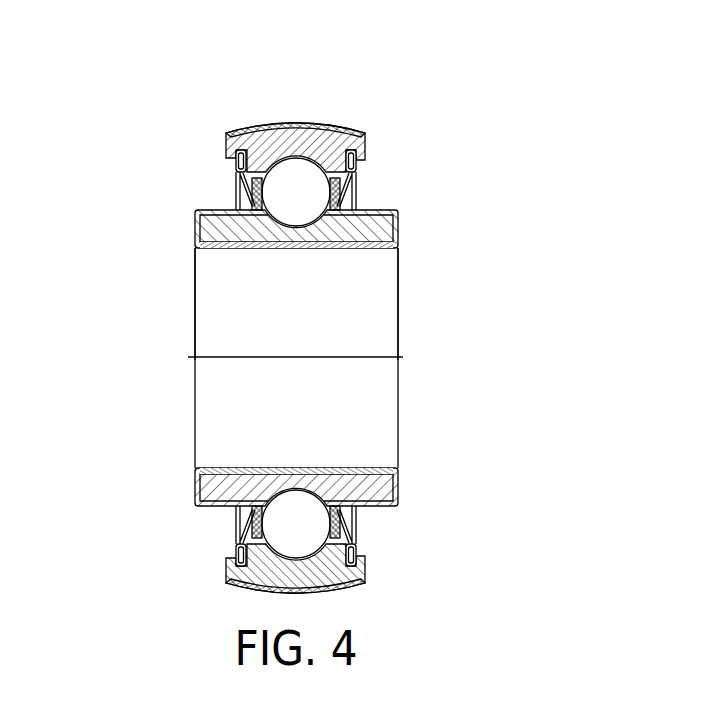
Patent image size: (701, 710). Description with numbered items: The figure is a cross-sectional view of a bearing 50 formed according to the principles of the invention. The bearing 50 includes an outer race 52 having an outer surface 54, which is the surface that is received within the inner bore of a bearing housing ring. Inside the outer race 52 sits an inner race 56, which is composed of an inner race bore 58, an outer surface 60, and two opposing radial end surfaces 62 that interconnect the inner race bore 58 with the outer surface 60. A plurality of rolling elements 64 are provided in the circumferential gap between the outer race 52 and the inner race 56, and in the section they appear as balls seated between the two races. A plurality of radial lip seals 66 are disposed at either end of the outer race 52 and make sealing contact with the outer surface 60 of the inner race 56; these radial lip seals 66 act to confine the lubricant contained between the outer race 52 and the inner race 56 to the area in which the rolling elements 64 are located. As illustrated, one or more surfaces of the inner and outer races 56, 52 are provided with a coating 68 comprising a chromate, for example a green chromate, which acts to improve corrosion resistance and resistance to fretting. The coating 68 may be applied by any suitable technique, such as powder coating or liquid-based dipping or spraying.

The bearing 50 is at (100, 140).
The outer race 52 is at (367, 140).
The outer surface 54 is at (330, 126).
The inner race 56 is at (195, 248).
The inner race bore 58 is at (228, 252).
The outer surface 60 is at (221, 210).
The radial end surfaces 62 is at (197, 228).
The rolling elements 64 is at (322, 192).
The radial lip seals 66 is at (233, 183).
The coating 68 is at (268, 126).